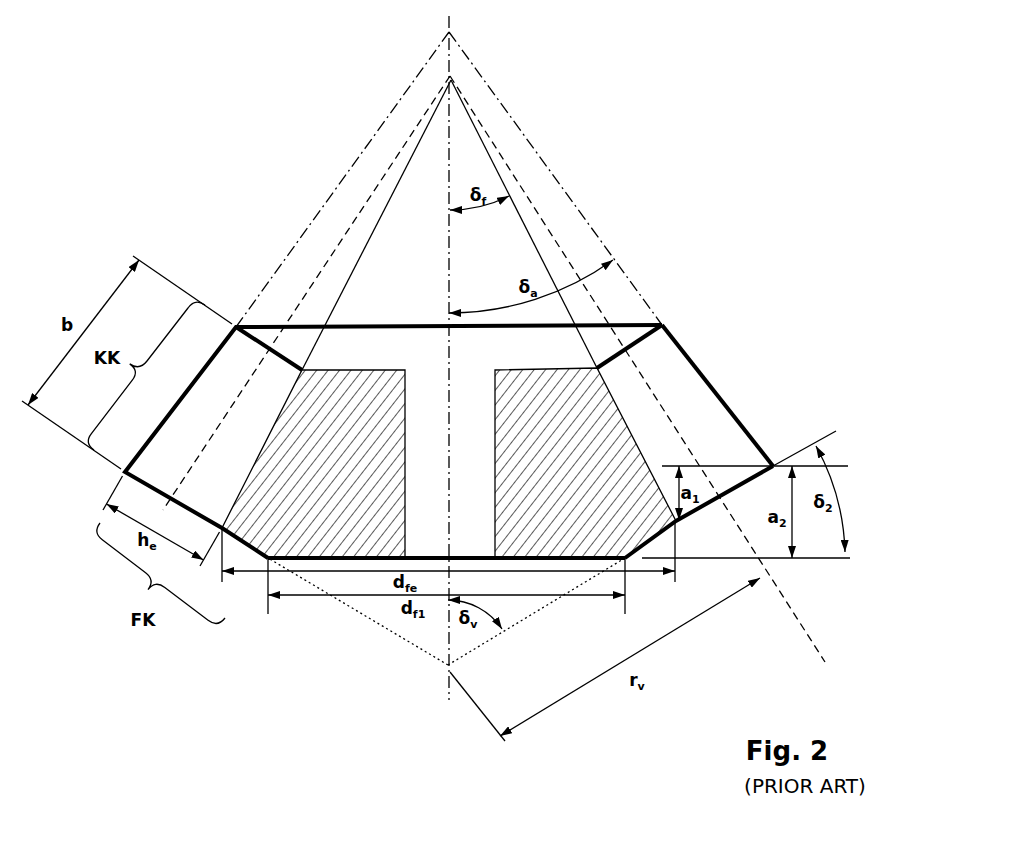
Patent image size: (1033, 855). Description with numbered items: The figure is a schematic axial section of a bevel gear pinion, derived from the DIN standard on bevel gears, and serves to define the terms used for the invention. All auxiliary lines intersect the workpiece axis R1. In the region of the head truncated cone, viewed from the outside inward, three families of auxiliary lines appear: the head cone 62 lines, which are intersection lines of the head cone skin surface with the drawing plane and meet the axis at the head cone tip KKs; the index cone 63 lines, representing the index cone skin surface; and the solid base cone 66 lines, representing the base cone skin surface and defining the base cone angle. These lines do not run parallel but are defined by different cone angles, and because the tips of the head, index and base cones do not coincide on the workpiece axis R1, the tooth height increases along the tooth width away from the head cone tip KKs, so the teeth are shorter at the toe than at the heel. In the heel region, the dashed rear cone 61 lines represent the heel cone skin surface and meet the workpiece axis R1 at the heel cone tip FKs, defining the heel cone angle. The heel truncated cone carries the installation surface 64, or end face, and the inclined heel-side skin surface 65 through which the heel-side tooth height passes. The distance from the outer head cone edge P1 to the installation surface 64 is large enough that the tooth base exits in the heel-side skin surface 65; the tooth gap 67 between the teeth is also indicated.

The rear cone 61 is at (365, 616).
The head cone 62 is at (413, 80).
The index cone 63 is at (393, 163).
The installation surface 64 is at (318, 560).
The heel-side skin surface 65 is at (648, 543).
The base cone 66 is at (367, 243).
The tooth gap 67 is at (699, 394).
The head cone tip KKs is at (455, 31).
The heel cone tip FKs is at (446, 672).
The outer head cone edge P1 is at (778, 458).
The workpiece axis R1 is at (450, 242).